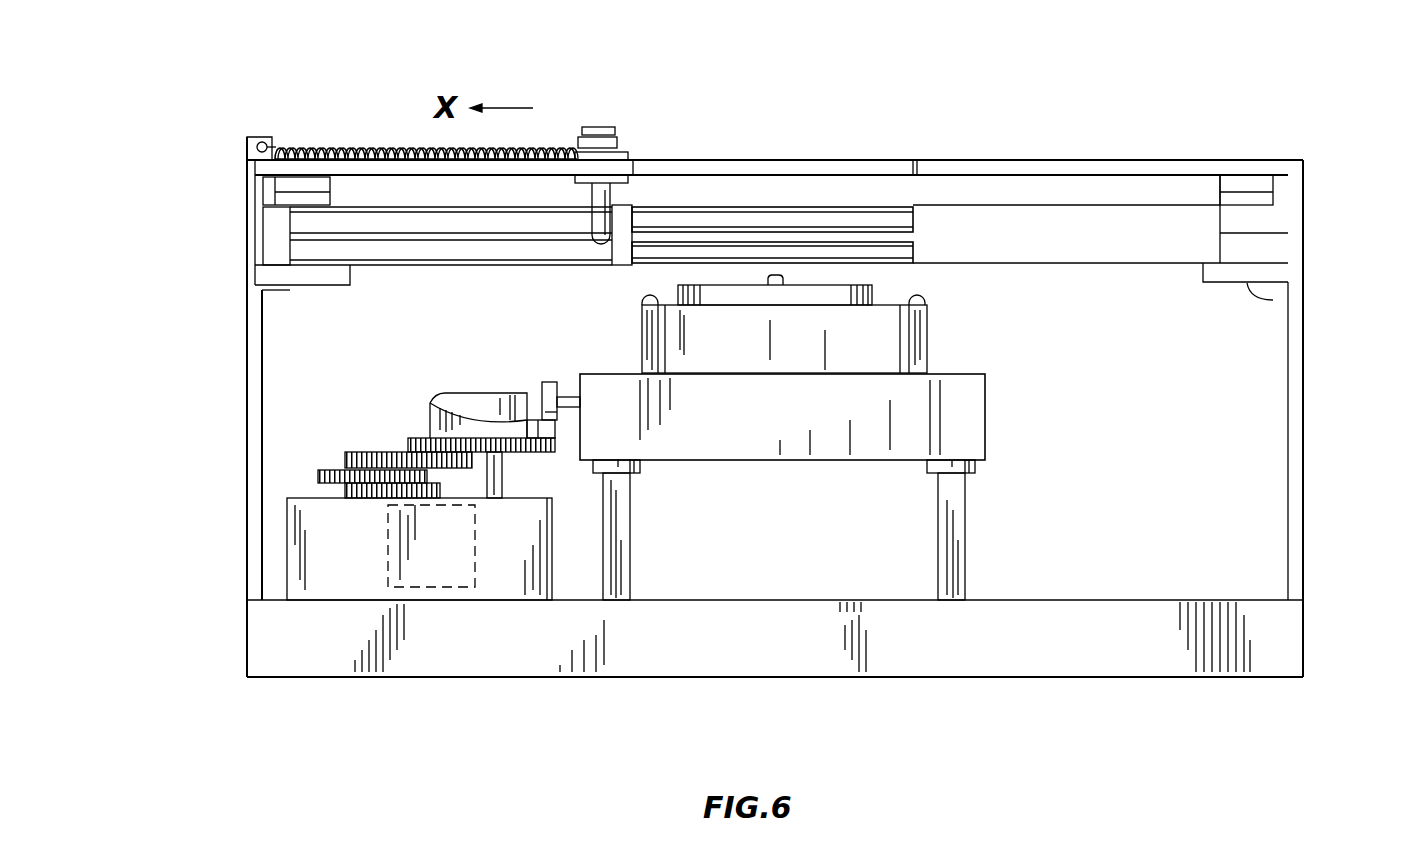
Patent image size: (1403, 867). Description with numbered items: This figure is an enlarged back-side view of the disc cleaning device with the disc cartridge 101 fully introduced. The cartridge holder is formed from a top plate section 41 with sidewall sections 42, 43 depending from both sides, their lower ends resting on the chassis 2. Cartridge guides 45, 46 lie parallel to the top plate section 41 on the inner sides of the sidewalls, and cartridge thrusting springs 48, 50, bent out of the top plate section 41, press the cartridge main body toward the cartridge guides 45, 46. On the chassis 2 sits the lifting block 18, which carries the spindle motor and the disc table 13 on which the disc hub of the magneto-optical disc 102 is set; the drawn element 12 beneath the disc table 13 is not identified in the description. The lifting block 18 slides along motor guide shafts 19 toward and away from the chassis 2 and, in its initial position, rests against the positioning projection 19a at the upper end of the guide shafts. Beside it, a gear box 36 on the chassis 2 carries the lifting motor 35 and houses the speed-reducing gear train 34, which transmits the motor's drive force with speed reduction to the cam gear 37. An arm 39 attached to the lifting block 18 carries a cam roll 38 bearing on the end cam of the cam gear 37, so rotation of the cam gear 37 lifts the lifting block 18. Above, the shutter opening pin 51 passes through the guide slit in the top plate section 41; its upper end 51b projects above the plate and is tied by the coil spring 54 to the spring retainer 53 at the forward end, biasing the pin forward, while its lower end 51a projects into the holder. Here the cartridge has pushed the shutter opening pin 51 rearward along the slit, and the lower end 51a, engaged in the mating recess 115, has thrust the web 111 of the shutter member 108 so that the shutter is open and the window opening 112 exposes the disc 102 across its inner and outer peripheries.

The chassis 2 is at (1130, 647).
The optical pickup body 12 is at (920, 300).
The disc table 13 is at (872, 288).
The lifting block 18 is at (985, 413).
The motor guide shafts 19 is at (620, 541).
The positioning projection 19a is at (975, 465).
The speed-reducing gear train 34 is at (372, 445).
The lifting motor 35 is at (440, 585).
The gear box 36 is at (340, 575).
The cam gear 37 is at (472, 402).
The cam roll 38 is at (548, 385).
The arm 39 is at (565, 397).
The top plate section 41 is at (1197, 158).
The sidewall section 42 is at (1302, 525).
The sidewall section 43 is at (247, 510).
The cartridge guide 45 is at (1257, 297).
The cartridge guide 46 is at (292, 290).
The cartridge thrusting spring 48 is at (1257, 185).
The cartridge thrusting spring 50 is at (283, 190).
The shutter opening pin 51 is at (642, 155).
The lower end of shutter opening pin 51a is at (613, 203).
The upper end of shutter opening pin 51b is at (613, 127).
The spring retainer 53 is at (252, 137).
The coil spring 54 is at (378, 138).
The disc cartridge 101 is at (1122, 200).
The magneto-optical disc 102 is at (905, 245).
The shutter member 108 is at (1031, 200).
The web 111 is at (1135, 245).
The window opening 112 is at (897, 220).
The mating recess 115 is at (305, 247).